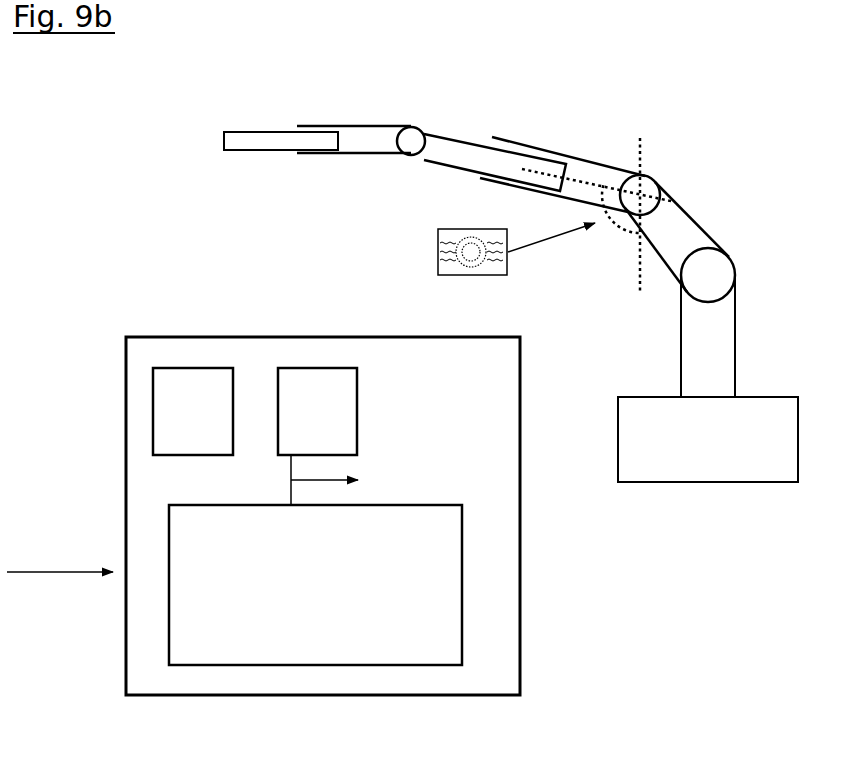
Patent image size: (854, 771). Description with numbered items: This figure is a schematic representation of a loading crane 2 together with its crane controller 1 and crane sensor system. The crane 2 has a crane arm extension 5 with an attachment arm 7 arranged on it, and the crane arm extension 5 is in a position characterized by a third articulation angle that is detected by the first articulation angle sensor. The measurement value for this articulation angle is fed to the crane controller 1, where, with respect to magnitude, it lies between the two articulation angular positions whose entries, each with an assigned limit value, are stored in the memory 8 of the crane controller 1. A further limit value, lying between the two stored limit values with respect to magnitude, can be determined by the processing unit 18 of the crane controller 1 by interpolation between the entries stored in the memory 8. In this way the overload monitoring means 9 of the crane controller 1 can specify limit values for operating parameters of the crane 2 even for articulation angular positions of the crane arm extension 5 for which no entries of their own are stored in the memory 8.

The crane controller 1 is at (100, 407).
The crane 2 is at (680, 145).
The crane arm extension 5 is at (573, 145).
The attachment arm 7 is at (292, 180).
The memory 8 is at (247, 548).
The overload monitoring means 9 is at (185, 424).
The processing unit 18 is at (292, 424).